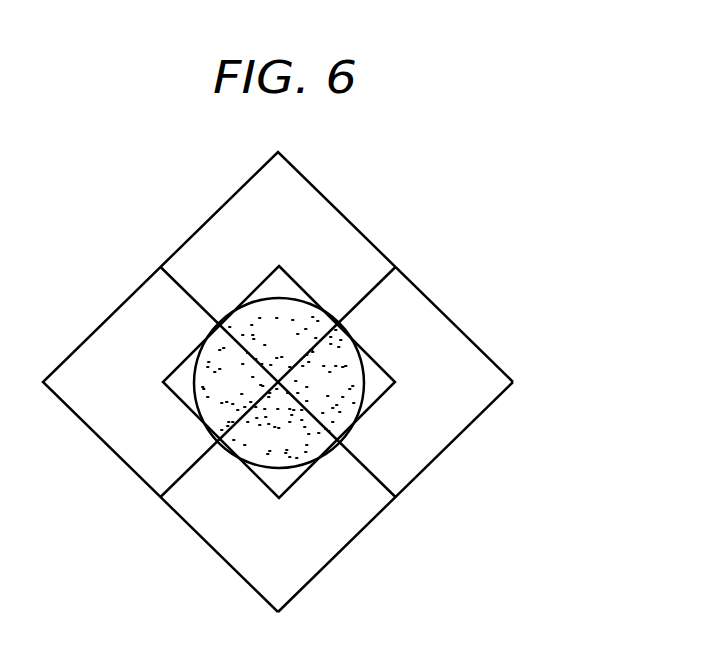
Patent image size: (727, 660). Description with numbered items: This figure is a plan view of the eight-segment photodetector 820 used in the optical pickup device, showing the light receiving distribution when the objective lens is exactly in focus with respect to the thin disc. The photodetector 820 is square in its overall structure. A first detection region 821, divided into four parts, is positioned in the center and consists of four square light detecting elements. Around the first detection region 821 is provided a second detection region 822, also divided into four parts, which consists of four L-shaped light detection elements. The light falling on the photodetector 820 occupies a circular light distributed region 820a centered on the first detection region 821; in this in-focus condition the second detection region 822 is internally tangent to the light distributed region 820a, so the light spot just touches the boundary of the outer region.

The photodetector 820 is at (482, 205).
The light distributed region 820a is at (362, 372).
The first detection region 821 is at (283, 376).
The second detection region 822 is at (402, 503).